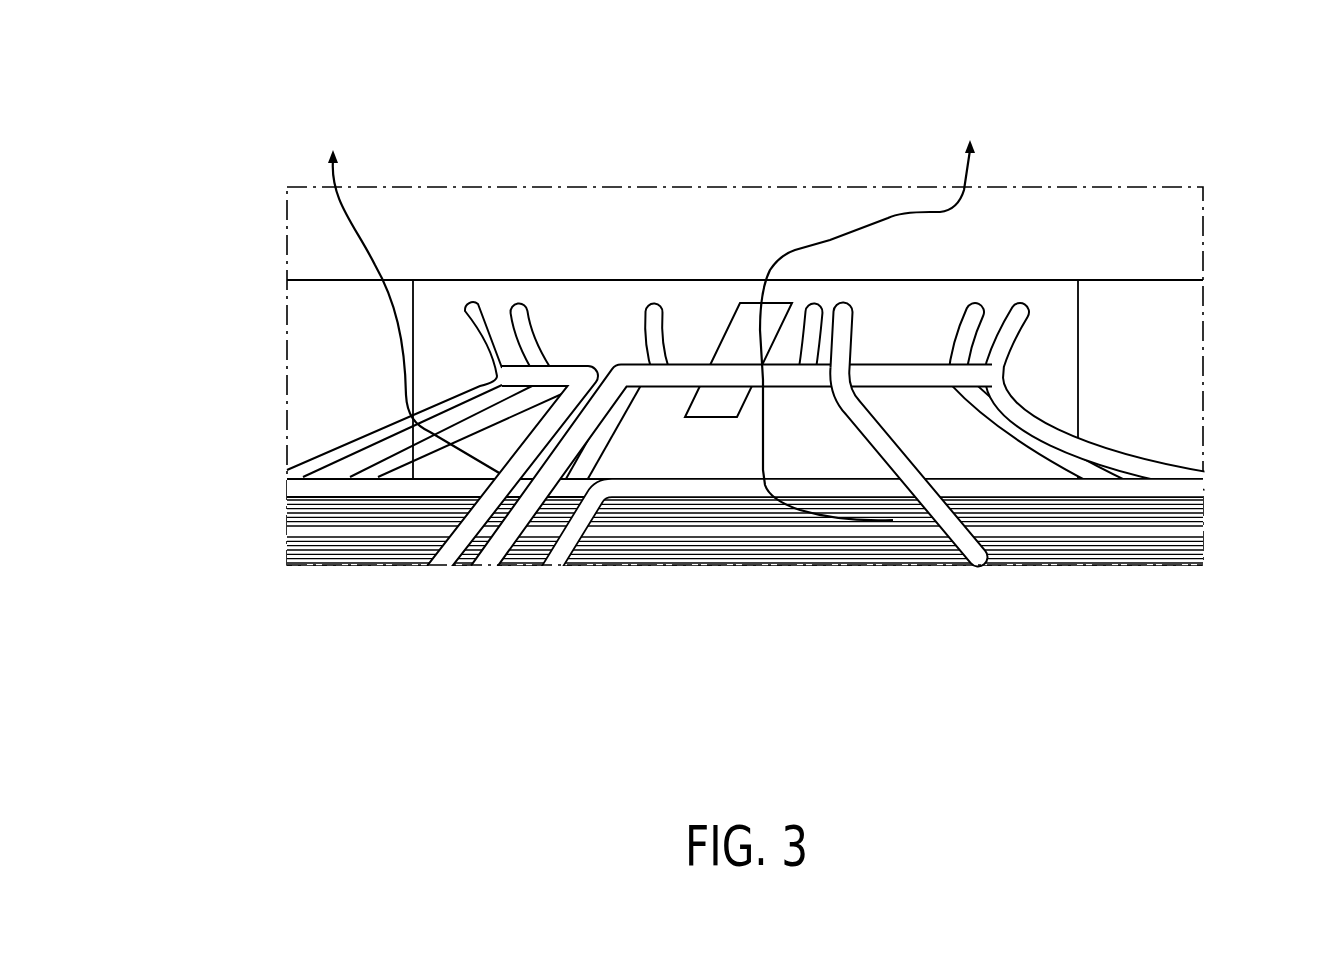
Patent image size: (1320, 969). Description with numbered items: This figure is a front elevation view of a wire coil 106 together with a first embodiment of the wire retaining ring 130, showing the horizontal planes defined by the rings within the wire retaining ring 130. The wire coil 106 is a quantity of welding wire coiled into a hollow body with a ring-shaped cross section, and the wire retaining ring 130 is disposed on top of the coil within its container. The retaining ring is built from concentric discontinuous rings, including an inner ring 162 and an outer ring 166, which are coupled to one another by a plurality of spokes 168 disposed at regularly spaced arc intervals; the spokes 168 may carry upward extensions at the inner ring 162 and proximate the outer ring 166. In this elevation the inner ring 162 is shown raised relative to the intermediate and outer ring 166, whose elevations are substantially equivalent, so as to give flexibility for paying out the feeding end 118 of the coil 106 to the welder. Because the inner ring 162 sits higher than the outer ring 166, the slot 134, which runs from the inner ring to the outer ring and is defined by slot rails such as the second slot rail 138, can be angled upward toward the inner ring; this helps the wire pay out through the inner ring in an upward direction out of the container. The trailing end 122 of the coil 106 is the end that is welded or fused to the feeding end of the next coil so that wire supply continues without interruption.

The wire retaining ring 130 is at (236, 110).
The trailing end 122 is at (357, 232).
The feeding end 118 is at (967, 176).
The spokes 168 is at (890, 455).
The second slot rail 138 is at (522, 458).
The slot 134 is at (553, 462).
The inner ring 162 is at (676, 378).
The outer ring 166 is at (853, 487).
The wire coil 106 is at (1147, 540).